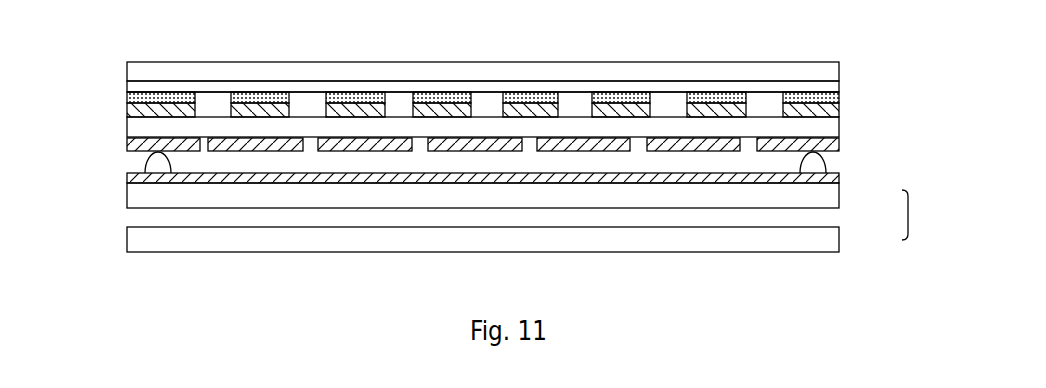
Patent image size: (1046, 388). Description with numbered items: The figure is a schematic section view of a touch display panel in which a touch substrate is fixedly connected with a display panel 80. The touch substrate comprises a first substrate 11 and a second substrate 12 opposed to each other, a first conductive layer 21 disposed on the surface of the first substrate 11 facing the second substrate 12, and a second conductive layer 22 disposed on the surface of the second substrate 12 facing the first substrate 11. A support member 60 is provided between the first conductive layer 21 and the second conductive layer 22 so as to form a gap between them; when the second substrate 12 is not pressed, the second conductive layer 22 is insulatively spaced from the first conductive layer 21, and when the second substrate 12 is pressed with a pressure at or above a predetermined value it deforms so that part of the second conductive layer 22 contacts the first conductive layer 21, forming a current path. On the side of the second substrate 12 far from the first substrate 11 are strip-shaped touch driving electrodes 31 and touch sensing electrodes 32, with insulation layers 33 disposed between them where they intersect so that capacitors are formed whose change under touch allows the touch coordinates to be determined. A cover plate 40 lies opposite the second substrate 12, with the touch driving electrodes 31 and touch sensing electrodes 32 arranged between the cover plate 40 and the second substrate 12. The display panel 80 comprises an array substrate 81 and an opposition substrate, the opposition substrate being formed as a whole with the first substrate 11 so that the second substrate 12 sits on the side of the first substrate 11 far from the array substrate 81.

The cover plate 40 is at (751, 62).
The touch sensing electrodes 32 is at (841, 86).
The insulation layers 33 is at (126, 98).
The touch driving electrodes 31 is at (835, 109).
The second substrate 12 is at (127, 127).
The second conductive layer 22 is at (846, 143).
The support member 60 is at (145, 161).
The first conductive layer 21 is at (127, 176).
The first substrate 11 is at (841, 196).
The array substrate 81 is at (841, 240).
The display panel 80 is at (923, 215).